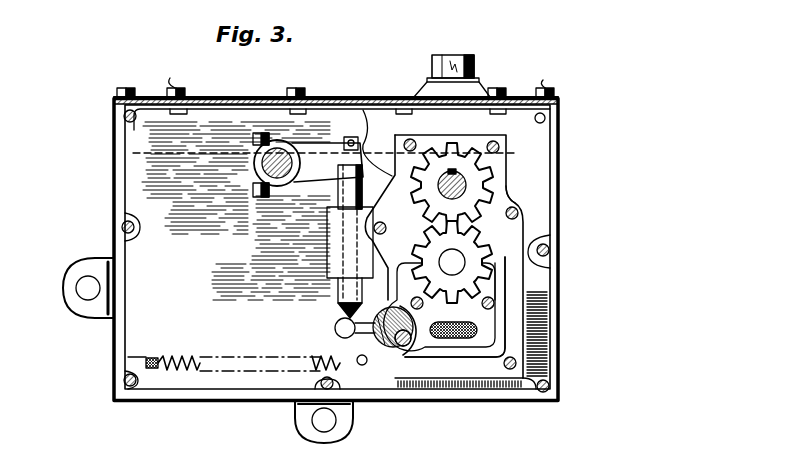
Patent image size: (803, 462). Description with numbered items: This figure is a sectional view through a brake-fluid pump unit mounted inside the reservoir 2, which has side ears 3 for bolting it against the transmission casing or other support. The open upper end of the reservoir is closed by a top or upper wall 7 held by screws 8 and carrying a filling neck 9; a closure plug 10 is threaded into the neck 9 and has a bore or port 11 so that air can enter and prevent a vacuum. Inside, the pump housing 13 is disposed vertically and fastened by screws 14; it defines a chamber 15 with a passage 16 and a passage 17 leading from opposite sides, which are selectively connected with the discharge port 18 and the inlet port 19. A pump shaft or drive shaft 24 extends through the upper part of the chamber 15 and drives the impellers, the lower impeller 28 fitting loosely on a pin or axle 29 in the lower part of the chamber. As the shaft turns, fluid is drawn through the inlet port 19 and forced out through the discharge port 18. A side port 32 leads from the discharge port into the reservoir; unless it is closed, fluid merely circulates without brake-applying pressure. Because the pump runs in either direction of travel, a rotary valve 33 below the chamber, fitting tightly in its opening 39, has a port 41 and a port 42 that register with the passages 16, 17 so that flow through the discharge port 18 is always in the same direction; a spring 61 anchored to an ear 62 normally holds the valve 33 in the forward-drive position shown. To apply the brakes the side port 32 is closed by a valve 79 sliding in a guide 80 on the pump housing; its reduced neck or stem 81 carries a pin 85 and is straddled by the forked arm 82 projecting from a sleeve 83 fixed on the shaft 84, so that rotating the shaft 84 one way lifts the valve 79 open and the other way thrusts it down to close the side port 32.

The reservoir 2 is at (558, 336).
The side ears 3 is at (78, 305).
The top or upper wall 7 is at (228, 97).
The screws 8 is at (135, 90).
The filling neck 9 is at (483, 96).
The closure plug 10 is at (470, 62).
The bore or port 11 is at (455, 258).
The pump housing 13 is at (478, 262).
The screws 14 is at (497, 149).
The chamber 15 is at (396, 175).
The passage 16 is at (390, 277).
The passage 17 is at (507, 303).
The discharge port 18 is at (335, 328).
The inlet port 19 is at (432, 318).
The pump shaft or drive shaft 24 is at (437, 186).
The lower impeller or pump element 28 is at (473, 267).
The pin or axle 29 is at (518, 225).
The side port 32 is at (338, 307).
The rotary valve 33 is at (371, 367).
The opening 39 is at (405, 345).
The port 41 is at (395, 348).
The port 42 is at (375, 332).
The spring 61 is at (190, 355).
The ear 62 is at (150, 358).
The valve 79 is at (348, 183).
The guide 80 is at (325, 235).
The neck or stem 81 is at (343, 140).
The arm 82 is at (327, 162).
The sleeve 83 is at (324, 152).
The shaft 84 is at (263, 176).
The pin 85 is at (363, 110).